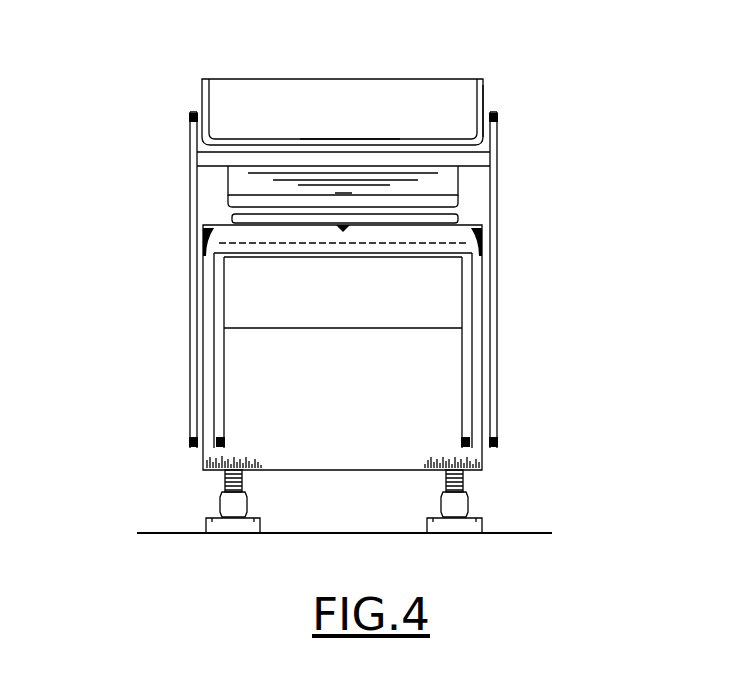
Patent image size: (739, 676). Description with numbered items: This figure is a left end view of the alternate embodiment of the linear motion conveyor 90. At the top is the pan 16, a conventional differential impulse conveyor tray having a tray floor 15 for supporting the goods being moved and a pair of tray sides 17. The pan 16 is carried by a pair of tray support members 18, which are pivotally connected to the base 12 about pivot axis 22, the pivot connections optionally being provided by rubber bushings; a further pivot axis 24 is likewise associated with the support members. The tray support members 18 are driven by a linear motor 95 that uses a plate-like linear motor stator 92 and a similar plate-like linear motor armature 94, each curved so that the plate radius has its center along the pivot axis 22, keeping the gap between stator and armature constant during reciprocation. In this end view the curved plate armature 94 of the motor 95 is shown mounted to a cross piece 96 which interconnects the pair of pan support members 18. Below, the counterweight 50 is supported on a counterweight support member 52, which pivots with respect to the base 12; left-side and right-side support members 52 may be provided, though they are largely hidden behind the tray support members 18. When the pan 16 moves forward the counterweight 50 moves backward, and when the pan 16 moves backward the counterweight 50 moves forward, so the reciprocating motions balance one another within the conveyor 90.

The base 12 is at (349, 379).
The tray floor 15 is at (362, 142).
The pan 16 is at (203, 100).
The tray sides 17 is at (485, 88).
The tray support members 18 is at (188, 315).
The pivot axis 22 is at (190, 435).
The pivot axis 24 is at (188, 126).
The counterweight 50 is at (331, 350).
The counterweight support member 52 is at (225, 365).
The linear motion conveyor 90 is at (502, 278).
The linear motor stator 92 is at (232, 215).
The linear motor armature 94 is at (247, 181).
The linear motor 95 is at (503, 198).
The cross piece 96 is at (205, 155).